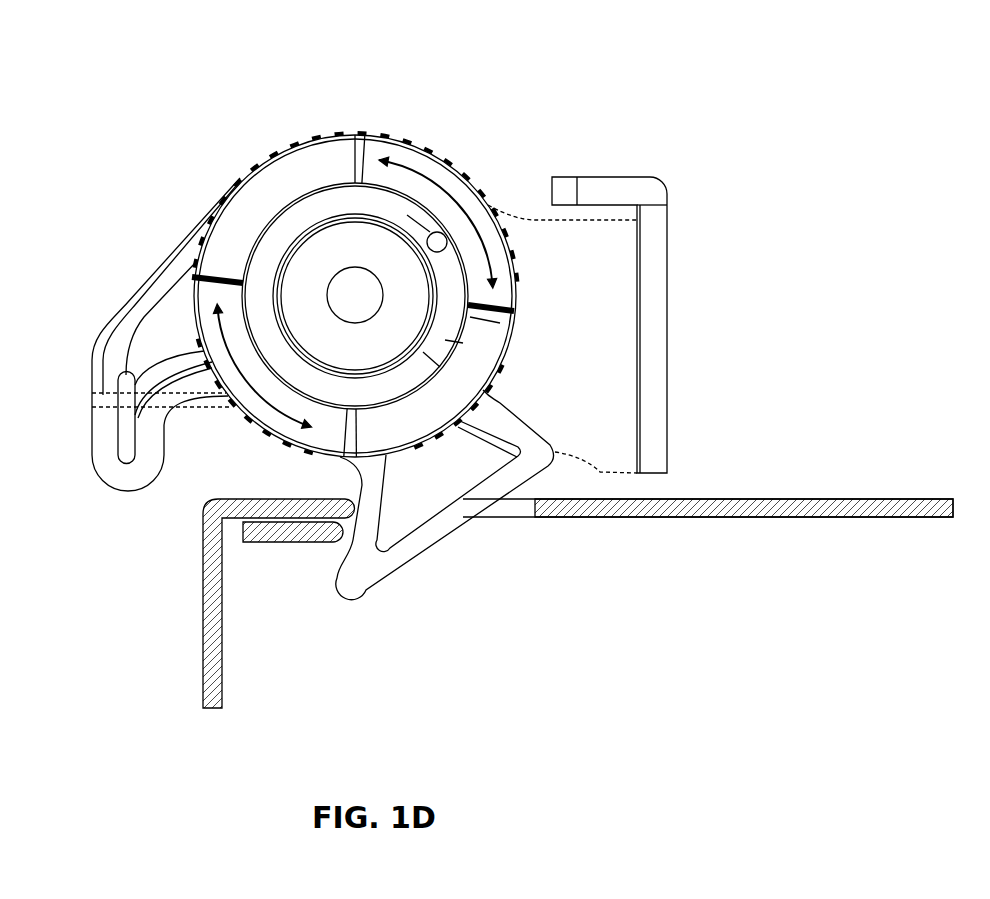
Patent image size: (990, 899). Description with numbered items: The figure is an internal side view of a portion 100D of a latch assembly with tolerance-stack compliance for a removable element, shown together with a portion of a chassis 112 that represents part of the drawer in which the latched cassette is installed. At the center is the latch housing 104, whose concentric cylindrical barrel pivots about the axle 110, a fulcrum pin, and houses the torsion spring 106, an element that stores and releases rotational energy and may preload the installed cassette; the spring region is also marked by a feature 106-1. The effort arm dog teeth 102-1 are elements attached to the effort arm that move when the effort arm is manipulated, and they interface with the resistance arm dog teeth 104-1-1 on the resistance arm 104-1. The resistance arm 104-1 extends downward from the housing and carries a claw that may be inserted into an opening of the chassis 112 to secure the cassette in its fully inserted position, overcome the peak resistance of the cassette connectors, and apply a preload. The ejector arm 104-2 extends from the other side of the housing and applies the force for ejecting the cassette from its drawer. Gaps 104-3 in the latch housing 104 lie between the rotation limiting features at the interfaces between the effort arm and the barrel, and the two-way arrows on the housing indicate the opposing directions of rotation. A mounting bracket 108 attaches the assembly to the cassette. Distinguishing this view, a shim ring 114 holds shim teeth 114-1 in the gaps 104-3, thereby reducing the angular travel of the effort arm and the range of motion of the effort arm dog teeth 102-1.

The portion of the latch assembly 100D is at (148, 85).
The effort arm dog teeth 102-1 is at (513, 260).
The latch housing 104 is at (372, 258).
The resistance arm 104-1 is at (357, 565).
The resistance arm dog teeth 104-1-1 is at (284, 178).
The ejector arm 104-2 is at (123, 478).
The gaps 104-3 is at (362, 138).
The torsion spring 106 is at (437, 250).
The inner ring spoke 106-1 is at (447, 340).
The mounting bracket 108 is at (648, 267).
The axle 110 is at (372, 303).
The chassis 112 is at (788, 503).
The shim ring 114 is at (325, 132).
The shim teeth 114-1 is at (150, 275).